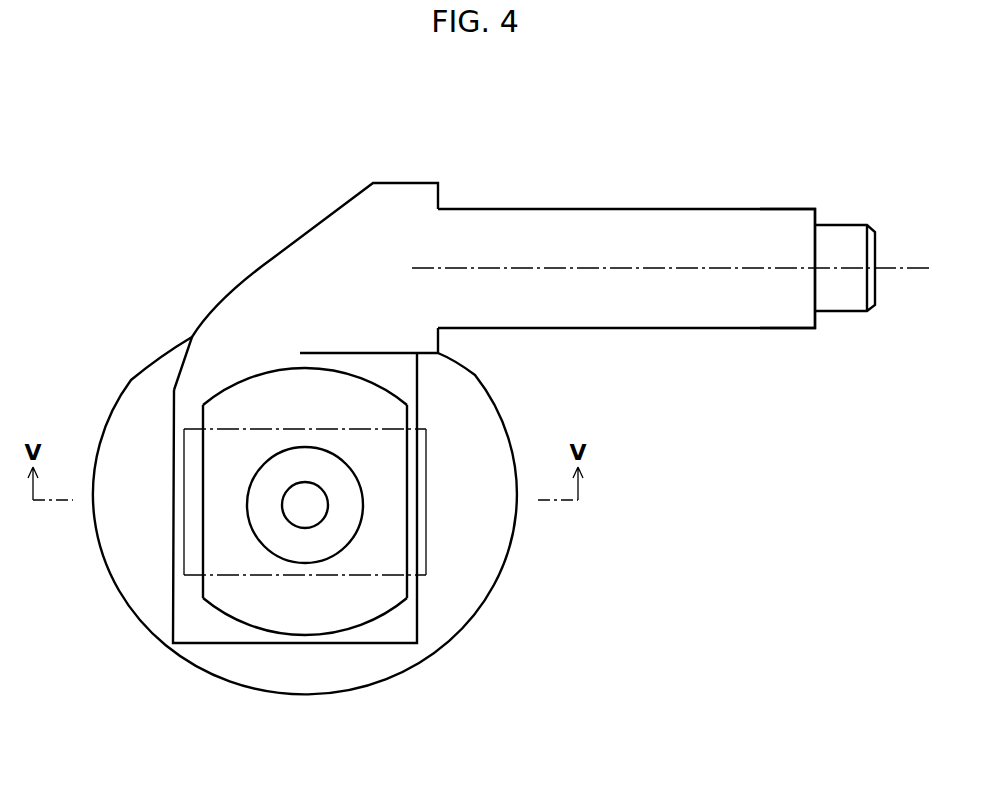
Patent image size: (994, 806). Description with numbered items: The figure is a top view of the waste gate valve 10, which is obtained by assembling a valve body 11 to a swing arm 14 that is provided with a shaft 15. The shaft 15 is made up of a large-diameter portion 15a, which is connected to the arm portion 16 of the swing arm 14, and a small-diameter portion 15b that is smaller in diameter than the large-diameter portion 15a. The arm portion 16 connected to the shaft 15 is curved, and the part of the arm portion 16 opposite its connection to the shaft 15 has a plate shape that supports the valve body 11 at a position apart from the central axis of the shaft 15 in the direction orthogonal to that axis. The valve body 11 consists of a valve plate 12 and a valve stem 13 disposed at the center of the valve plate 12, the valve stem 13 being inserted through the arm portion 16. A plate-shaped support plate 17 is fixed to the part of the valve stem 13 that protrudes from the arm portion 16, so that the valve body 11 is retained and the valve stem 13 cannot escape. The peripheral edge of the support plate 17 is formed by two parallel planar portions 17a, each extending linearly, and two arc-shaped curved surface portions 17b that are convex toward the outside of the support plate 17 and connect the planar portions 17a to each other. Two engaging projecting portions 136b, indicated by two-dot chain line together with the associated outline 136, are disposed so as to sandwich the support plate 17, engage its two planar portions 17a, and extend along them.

The waste gate valve 10 is at (226, 187).
The valve body 11 is at (439, 514).
The valve plate 12 is at (510, 518).
The valve stem 13 is at (345, 518).
The swing arm 14 is at (842, 114).
The shaft 15 is at (820, 221).
The large-diameter portion 15a is at (772, 218).
The small-diameter portion 15b is at (846, 239).
The arm portion 16 is at (383, 243).
The support plate 17 is at (387, 600).
The planar portions 17a is at (203, 418).
The curved surface portions 17b is at (252, 373).
The holding area boundary line 136 is at (353, 575).
The engaging projecting portions 136b is at (184, 462).